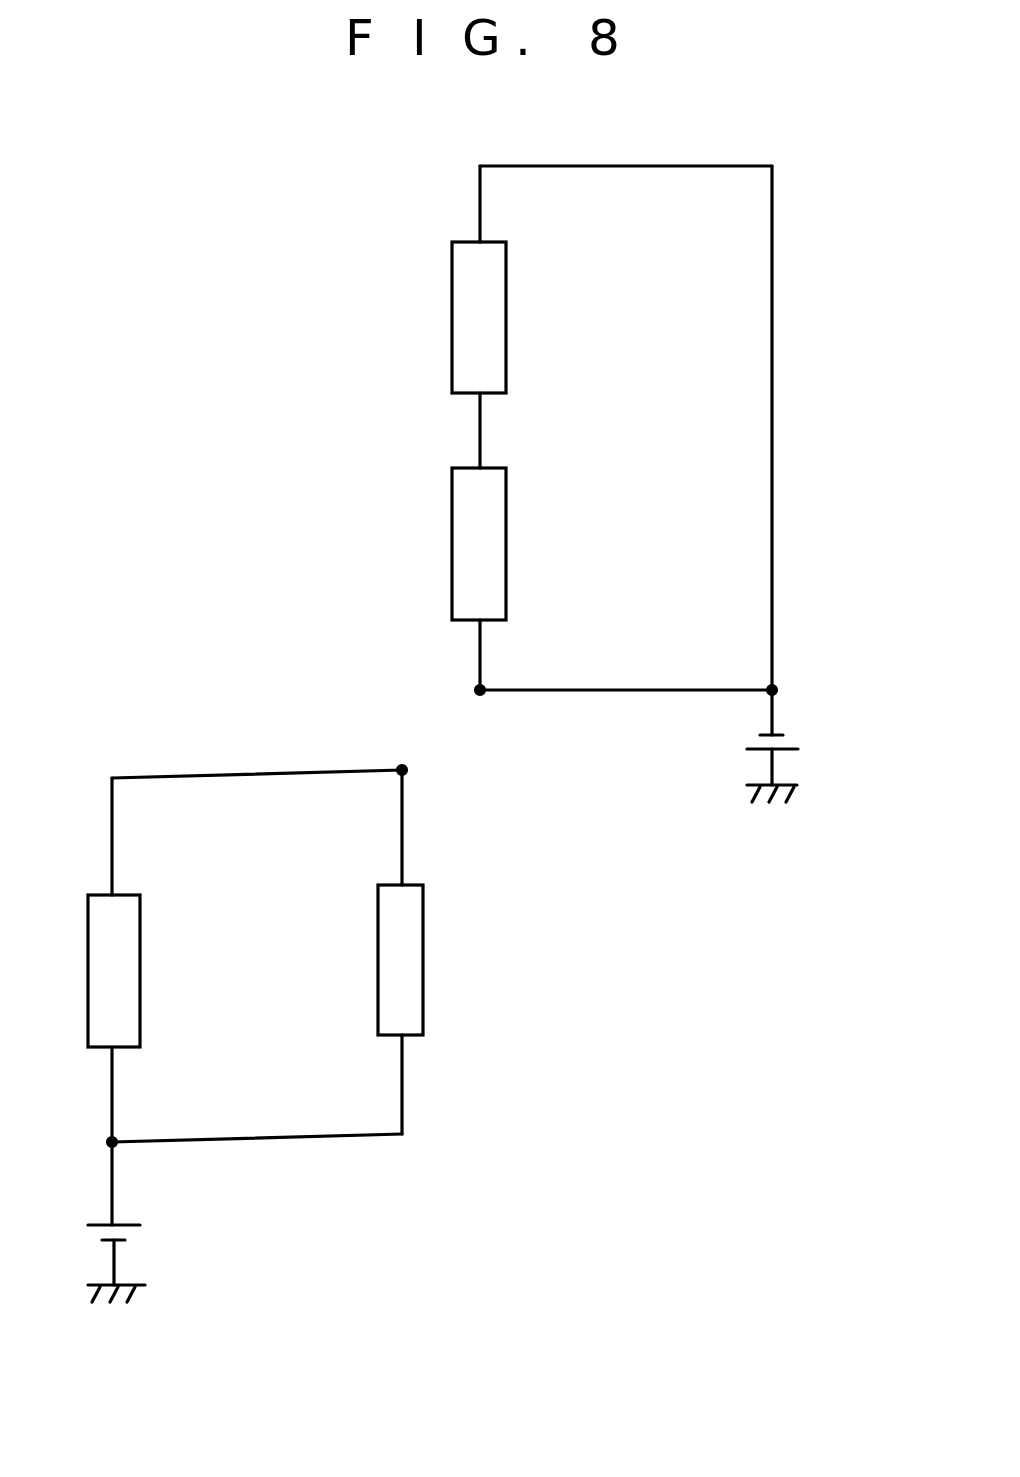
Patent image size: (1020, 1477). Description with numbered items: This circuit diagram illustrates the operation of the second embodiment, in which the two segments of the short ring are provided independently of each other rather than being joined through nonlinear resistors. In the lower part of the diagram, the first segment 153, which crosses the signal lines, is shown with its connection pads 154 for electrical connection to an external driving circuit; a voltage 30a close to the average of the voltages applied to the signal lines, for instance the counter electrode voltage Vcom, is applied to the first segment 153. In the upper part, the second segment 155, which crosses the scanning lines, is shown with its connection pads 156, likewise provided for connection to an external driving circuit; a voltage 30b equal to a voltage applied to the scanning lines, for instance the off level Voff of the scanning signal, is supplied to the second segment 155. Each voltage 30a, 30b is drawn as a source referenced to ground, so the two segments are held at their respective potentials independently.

The first segment 153 is at (402, 855).
The connection pad 154 is at (140, 983).
The second segment 155 is at (770, 603).
The connection pad 156 is at (506, 320).
The voltage 30a is at (140, 1232).
The voltage 30b is at (785, 740).